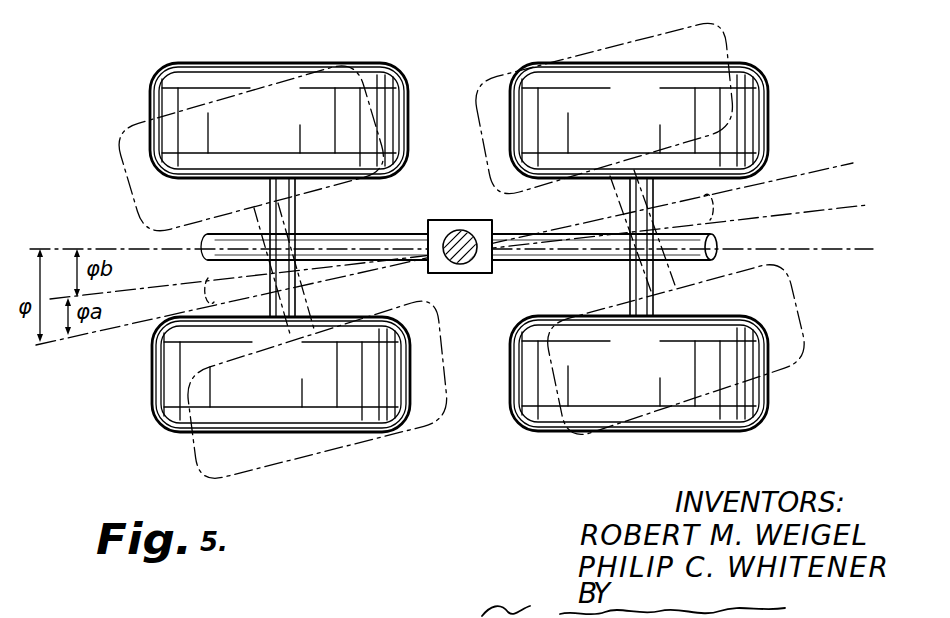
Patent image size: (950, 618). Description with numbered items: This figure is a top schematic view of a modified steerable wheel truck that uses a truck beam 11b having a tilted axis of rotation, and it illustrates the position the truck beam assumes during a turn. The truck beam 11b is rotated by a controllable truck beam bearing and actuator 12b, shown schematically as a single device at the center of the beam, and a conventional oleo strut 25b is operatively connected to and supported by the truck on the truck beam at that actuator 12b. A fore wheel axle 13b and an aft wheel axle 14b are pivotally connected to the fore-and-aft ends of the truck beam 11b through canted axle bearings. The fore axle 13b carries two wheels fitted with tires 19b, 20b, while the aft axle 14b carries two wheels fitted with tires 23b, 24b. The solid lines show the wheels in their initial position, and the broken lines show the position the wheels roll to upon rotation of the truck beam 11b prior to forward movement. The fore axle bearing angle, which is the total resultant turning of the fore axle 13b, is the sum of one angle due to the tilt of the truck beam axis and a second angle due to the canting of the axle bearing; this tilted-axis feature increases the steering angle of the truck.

The tire 23b is at (410, 98).
The tire 19b is at (770, 116).
The tire 24b is at (152, 395).
The tire 20b is at (770, 400).
The aft wheel axle 14b is at (272, 190).
The fore wheel axle 13b is at (654, 196).
The truck beam 11b is at (568, 233).
The truck beam bearing and actuator 12b is at (459, 219).
The oleo strut 25b is at (444, 236).